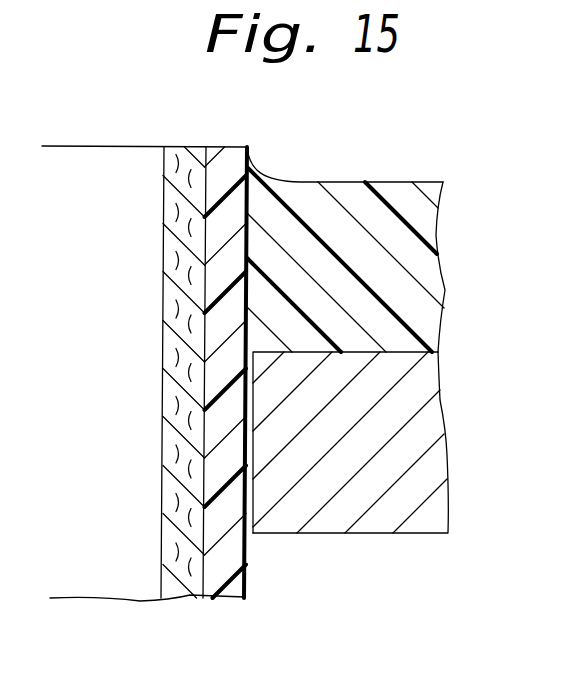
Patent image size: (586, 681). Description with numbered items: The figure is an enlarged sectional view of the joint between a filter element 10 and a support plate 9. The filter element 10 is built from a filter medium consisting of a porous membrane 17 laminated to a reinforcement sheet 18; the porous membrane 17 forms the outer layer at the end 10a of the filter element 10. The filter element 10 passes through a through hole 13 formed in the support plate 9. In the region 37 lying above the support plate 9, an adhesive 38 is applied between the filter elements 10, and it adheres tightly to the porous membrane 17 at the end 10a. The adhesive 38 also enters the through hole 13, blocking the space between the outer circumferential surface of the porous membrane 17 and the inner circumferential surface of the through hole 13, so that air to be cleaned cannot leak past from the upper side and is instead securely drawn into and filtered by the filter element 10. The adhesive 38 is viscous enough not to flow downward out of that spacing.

The support plate 9 is at (437, 424).
The filter element 10 is at (113, 593).
The end of the filter element 10a is at (123, 158).
The through hole 13 is at (247, 495).
The porous membrane 17 is at (230, 592).
The reinforcement sheet 18 is at (178, 592).
The region 37 is at (433, 288).
The adhesive 38 is at (397, 193).